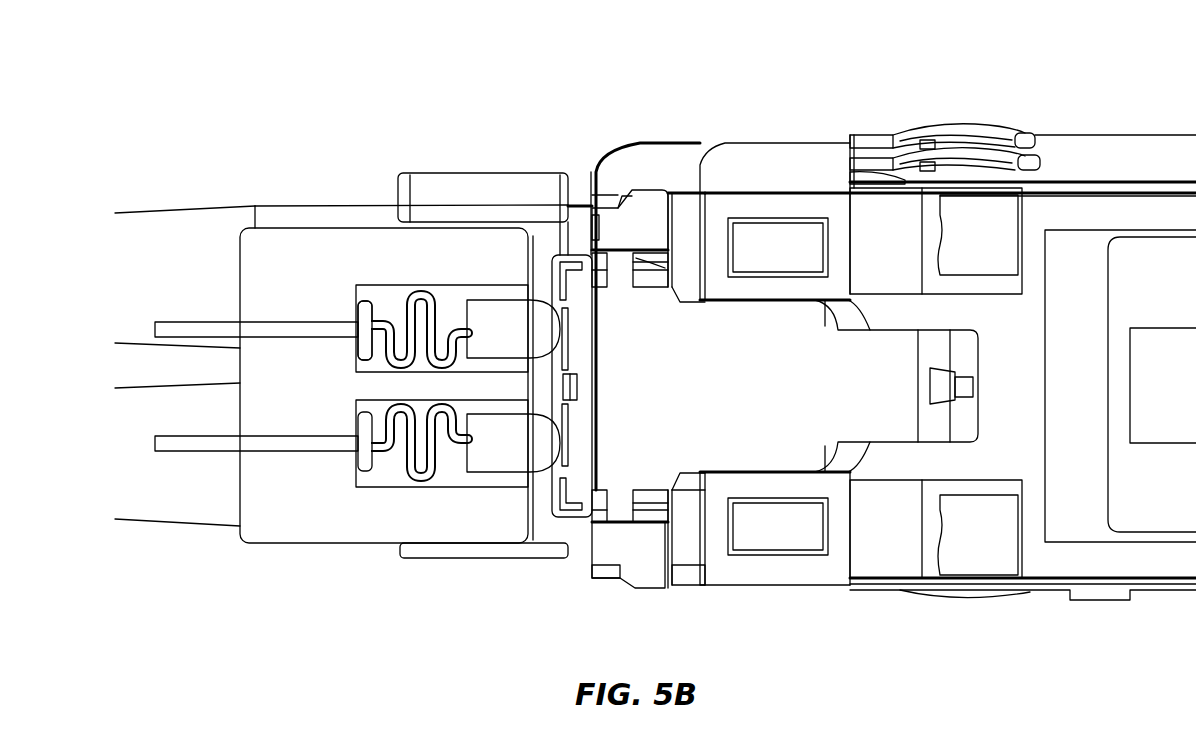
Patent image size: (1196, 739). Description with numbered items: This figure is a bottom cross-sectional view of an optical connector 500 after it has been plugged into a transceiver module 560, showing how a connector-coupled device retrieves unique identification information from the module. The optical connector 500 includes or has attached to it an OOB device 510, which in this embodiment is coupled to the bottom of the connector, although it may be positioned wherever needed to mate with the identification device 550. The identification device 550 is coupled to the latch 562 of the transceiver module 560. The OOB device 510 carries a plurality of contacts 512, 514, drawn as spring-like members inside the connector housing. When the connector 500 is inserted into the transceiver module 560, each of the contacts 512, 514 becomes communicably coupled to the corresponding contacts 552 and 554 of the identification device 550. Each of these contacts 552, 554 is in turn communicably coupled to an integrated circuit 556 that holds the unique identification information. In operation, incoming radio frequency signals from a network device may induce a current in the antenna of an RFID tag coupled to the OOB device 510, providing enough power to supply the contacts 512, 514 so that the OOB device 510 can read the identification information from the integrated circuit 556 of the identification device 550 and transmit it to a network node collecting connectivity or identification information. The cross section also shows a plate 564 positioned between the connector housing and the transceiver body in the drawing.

The optical connector 500 is at (260, 68).
The OOB device 510 is at (349, 228).
The contact 512 is at (530, 455).
The contact 514 is at (530, 340).
The identification device 550 is at (548, 278).
The contact 552 is at (568, 340).
The contact 554 is at (568, 438).
The integrated circuit 556 is at (580, 388).
The transceiver module 560 is at (1065, 106).
The latch 562 is at (740, 400).
The shield plate 564 is at (616, 150).